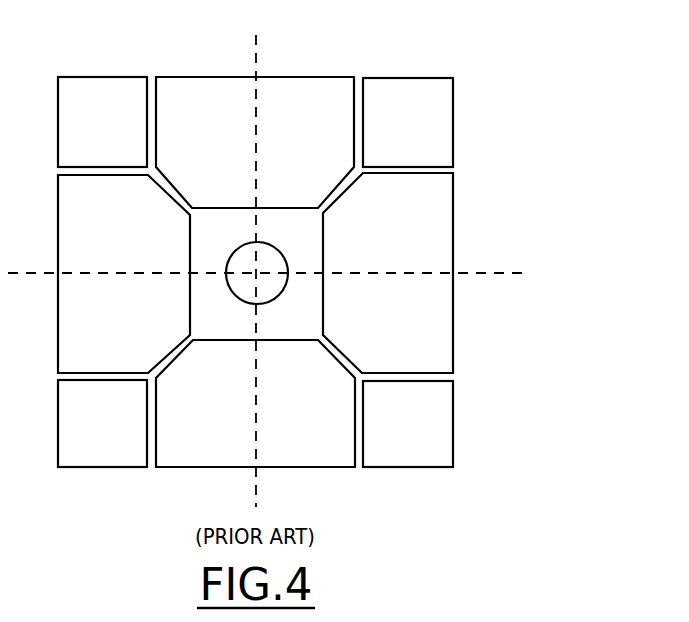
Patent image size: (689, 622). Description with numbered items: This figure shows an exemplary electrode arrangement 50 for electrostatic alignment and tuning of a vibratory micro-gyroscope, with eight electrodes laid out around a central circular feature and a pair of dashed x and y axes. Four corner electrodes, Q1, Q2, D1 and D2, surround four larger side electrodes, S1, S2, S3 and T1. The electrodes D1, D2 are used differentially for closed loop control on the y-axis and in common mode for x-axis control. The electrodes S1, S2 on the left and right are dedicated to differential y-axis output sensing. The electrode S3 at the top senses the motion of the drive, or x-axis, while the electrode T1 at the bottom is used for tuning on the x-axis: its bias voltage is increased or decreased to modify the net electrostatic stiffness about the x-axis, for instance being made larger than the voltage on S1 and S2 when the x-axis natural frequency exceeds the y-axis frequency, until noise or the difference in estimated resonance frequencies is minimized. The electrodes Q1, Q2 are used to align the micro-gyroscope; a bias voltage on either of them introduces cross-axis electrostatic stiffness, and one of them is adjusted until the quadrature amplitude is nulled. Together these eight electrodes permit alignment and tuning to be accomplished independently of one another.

The prior art vertical Hall sensor element 50 is at (314, 270).
The alignment electrode Q1 is at (408, 122).
The alignment electrode Q2 is at (102, 122).
The y-axis output sensing electrode S1 is at (388, 273).
The y-axis output sensing electrode S2 is at (124, 274).
The drive sensing electrode S3 is at (255, 142).
The drive electrode D1 is at (408, 424).
The drive electrode D2 is at (102, 423).
The tuning electrode T1 is at (255, 403).